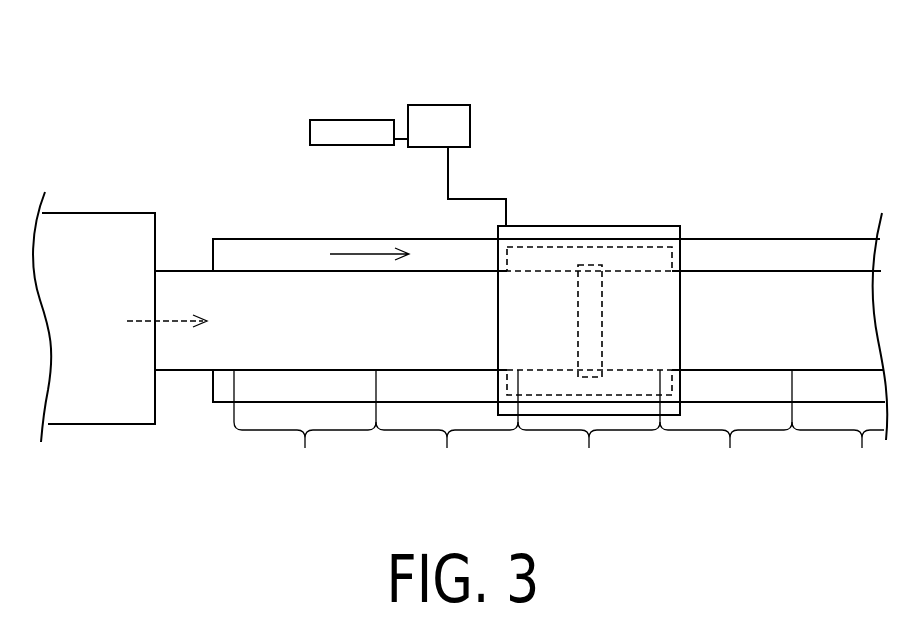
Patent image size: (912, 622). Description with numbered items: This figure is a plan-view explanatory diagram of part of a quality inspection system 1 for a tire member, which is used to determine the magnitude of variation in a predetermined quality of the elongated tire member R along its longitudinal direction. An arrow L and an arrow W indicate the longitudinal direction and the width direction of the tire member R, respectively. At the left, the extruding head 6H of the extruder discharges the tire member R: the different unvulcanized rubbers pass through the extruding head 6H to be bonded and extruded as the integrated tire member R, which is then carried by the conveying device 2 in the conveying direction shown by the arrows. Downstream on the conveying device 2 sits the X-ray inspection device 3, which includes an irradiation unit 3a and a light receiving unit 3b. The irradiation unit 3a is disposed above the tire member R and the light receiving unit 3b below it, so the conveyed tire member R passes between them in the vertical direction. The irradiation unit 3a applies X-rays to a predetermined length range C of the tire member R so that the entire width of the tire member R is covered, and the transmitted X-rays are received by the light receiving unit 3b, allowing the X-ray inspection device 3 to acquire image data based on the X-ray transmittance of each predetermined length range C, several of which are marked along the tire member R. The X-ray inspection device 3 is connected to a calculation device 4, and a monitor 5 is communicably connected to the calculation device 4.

The quality inspection system 1 is at (546, 118).
The conveying device 2 is at (283, 227).
The X-ray inspection device 3 is at (638, 221).
The irradiation unit 3a is at (600, 345).
The light receiving unit 3b is at (557, 255).
The calculation device 4 is at (437, 110).
The monitor 5 is at (355, 127).
The extruding head 6H is at (85, 226).
The tire member R is at (188, 260).
The longitudinal direction L is at (700, 205).
The width direction W is at (842, 110).
The predetermined length range C is at (559, 426).